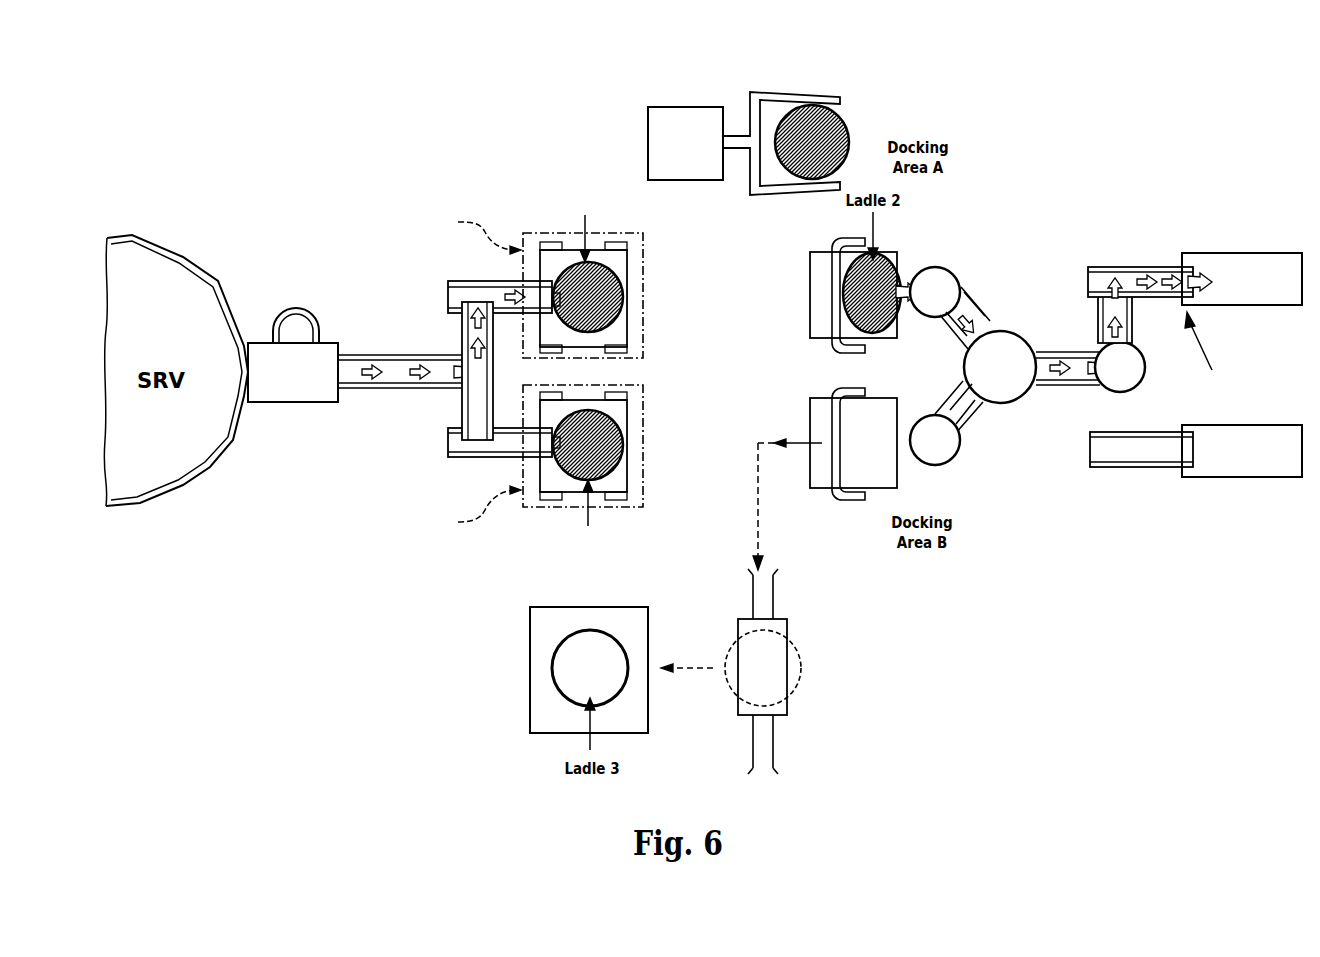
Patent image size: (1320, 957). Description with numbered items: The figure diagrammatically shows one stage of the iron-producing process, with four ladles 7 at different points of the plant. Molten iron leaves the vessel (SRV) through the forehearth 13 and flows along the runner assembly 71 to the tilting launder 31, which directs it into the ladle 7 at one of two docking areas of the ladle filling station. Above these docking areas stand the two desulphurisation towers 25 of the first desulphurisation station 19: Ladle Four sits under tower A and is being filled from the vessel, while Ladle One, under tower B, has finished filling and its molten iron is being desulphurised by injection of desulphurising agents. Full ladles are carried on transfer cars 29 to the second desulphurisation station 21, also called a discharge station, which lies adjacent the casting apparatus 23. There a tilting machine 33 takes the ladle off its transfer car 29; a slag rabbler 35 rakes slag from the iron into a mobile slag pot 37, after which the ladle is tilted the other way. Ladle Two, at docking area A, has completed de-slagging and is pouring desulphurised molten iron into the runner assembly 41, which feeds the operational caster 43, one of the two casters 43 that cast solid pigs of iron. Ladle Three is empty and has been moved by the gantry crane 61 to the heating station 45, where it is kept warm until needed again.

The ladle 7 is at (620, 270).
The forehearth 13 is at (292, 386).
The first desulphurisation station 19 is at (556, 333).
The second desulphurisation station 21 is at (1036, 349).
The casting apparatus 23 is at (1157, 247).
The desulphurisation tower 25 is at (643, 308).
The transfer car 29 is at (628, 272).
The tilting launder 31 is at (461, 329).
The tilting machine 33 is at (810, 269).
The slag rabbler 35 is at (660, 141).
The slag pot 37 is at (856, 128).
The runner assembly 41 is at (1098, 315).
The caster 43 is at (1240, 263).
The heating station 45 is at (648, 650).
The gantry crane 61 is at (787, 712).
The runner assembly 71 is at (394, 386).